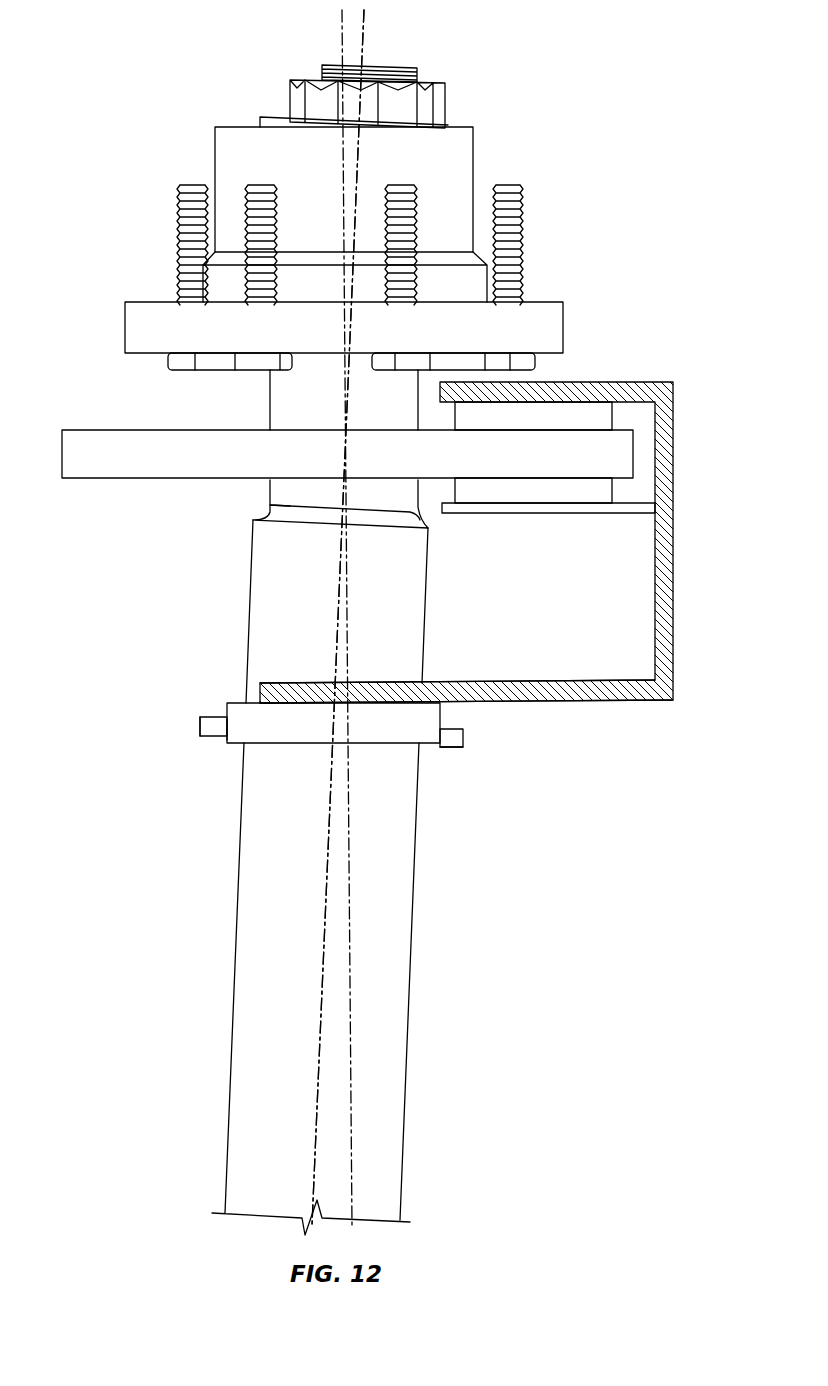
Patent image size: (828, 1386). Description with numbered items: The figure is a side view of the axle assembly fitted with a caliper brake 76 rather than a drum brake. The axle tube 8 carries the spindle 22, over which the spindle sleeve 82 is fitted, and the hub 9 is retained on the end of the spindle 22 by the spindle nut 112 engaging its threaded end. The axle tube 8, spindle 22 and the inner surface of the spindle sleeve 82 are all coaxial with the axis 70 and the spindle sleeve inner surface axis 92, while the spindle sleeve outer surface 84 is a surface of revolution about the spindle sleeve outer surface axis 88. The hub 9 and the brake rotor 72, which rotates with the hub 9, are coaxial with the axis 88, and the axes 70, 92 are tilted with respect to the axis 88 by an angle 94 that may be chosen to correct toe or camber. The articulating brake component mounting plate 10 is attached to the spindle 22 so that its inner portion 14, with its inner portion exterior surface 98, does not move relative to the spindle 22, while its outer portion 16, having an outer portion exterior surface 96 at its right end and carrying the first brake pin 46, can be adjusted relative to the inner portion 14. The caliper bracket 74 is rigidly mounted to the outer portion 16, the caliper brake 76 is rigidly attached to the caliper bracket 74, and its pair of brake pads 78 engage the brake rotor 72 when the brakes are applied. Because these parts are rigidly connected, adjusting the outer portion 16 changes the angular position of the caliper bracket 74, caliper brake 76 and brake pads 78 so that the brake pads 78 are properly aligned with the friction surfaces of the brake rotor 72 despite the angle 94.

The axle tube 8 is at (248, 990).
The hub 9 is at (458, 163).
The articulating brake component mounting plate 10 is at (210, 737).
The inner portion 14 is at (458, 738).
The outer portion 16 is at (405, 730).
The spindle 22 is at (263, 627).
The first brake pin 46 is at (453, 748).
The axis 70 is at (363, 52).
The brake rotor 72 is at (117, 450).
The caliper bracket 74 is at (597, 690).
The caliper brake 76 is at (655, 580).
The brake pads 78 is at (600, 405).
The spindle sleeve 82 is at (420, 508).
The spindle sleeve outer surface 84 is at (288, 488).
The spindle sleeve outer surface axis 88 is at (342, 50).
The spindle sleeve inner surface axis 92 is at (338, 617).
The angle 94 is at (400, 142).
The outer portion exterior surface 96 is at (277, 727).
The inner portion exterior surface 98 is at (198, 722).
The spindle nut 112 is at (430, 100).